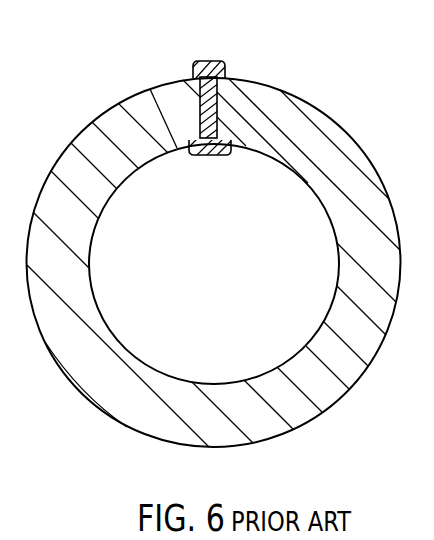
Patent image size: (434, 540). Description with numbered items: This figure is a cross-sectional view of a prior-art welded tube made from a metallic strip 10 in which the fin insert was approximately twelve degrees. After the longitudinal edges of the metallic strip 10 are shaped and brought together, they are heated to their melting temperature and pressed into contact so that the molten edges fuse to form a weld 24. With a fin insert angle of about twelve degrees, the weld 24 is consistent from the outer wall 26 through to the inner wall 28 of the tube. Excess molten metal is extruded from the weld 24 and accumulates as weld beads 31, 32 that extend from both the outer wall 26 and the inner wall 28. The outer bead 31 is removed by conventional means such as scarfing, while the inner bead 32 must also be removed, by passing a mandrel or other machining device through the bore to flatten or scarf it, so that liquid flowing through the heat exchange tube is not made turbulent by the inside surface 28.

The metallic strip 10 is at (214, 262).
The weld 24 is at (211, 106).
The outer wall 26 is at (340, 122).
The inner wall 28 is at (308, 184).
The weld bead 31 is at (221, 63).
The weld bead 32 is at (214, 156).